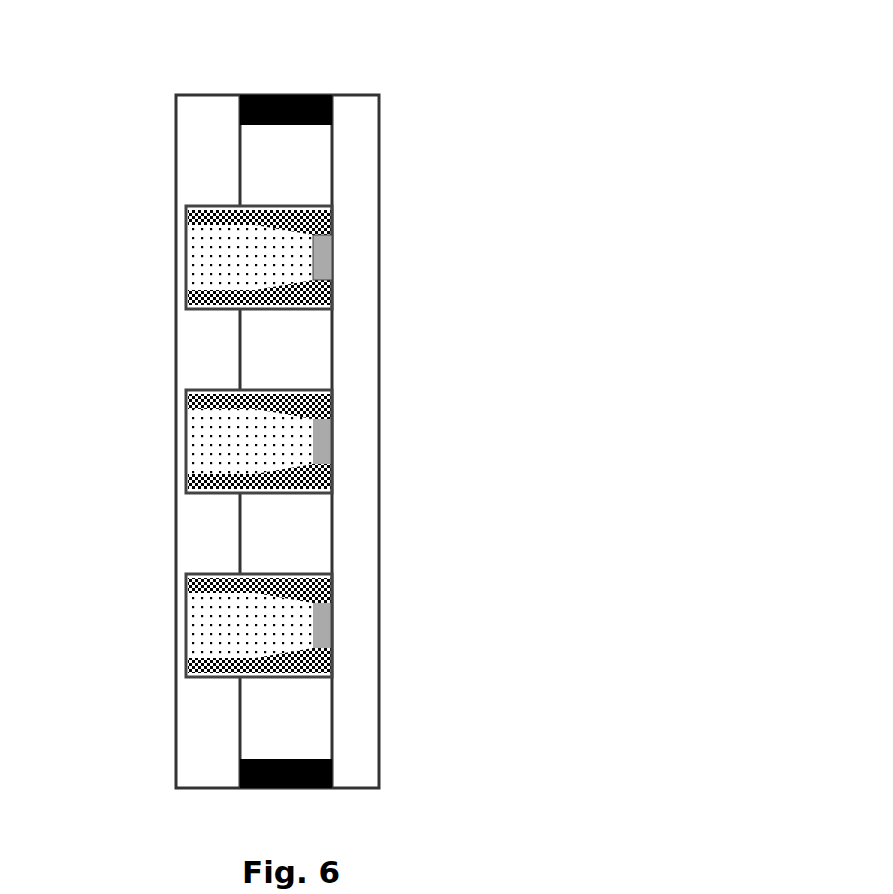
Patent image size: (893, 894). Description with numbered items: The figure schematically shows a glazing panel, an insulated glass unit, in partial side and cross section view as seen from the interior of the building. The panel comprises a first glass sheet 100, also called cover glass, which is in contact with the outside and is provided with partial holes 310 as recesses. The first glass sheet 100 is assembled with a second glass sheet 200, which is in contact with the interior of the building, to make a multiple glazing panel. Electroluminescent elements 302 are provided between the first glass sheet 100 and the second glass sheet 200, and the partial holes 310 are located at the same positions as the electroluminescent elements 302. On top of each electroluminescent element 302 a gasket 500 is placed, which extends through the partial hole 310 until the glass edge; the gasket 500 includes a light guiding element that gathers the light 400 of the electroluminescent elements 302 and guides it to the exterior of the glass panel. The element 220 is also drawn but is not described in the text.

The first glass sheet 100 is at (213, 91).
The second glass sheet 200 is at (356, 91).
The end sealing member 220 is at (286, 128).
The electroluminescent element 302 is at (334, 250).
The partial hole 310 is at (212, 504).
The light 400 is at (254, 632).
The gasket 500 is at (274, 389).